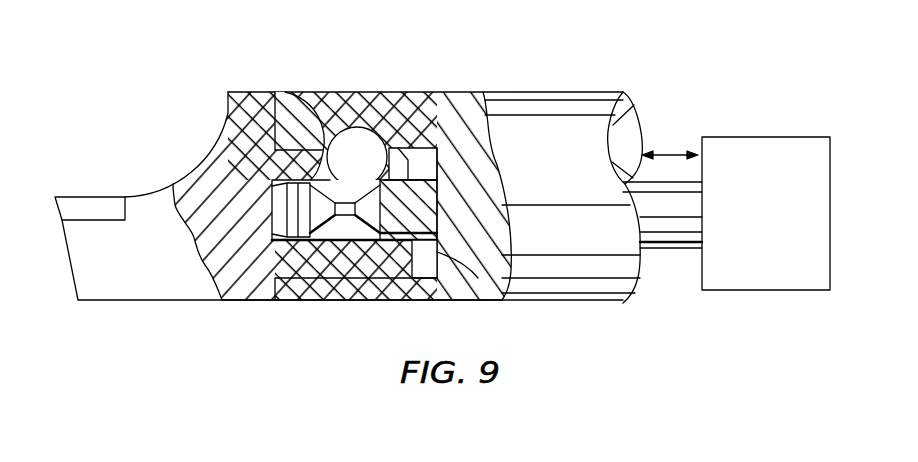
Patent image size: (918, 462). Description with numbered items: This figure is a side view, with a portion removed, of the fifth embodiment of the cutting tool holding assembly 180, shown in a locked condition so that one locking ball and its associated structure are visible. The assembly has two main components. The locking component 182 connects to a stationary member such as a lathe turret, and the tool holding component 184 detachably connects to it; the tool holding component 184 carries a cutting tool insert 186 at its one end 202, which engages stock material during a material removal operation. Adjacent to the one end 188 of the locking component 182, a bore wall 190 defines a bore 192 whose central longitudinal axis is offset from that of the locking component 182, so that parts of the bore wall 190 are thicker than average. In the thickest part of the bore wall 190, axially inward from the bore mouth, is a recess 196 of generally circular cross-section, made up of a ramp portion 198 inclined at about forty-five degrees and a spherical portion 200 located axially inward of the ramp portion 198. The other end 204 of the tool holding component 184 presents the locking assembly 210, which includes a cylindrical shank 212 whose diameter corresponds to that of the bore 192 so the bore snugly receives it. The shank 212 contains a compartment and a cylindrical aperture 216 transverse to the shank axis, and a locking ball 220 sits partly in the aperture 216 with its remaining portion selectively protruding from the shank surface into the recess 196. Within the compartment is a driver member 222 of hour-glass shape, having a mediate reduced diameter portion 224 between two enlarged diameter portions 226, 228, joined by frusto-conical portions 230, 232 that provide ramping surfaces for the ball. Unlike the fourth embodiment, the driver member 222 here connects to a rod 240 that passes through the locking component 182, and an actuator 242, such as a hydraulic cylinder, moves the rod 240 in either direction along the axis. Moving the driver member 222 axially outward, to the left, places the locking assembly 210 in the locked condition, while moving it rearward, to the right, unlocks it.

The cutting tool holding assembly 180 is at (329, 209).
The locking component 182 is at (614, 303).
The tool holding component 184 is at (100, 292).
The cutting tool insert 186 is at (77, 203).
The one end of the locking component 188 is at (258, 307).
The bore wall 190 is at (370, 298).
The bore 192 is at (510, 293).
The recess 196 is at (408, 203).
The ramp portion 198 is at (350, 122).
The spherical portion 200 is at (370, 200).
The one end of the tool holding component 202 is at (70, 273).
The other end of the tool holding component 204 is at (432, 290).
The locking assembly 210 is at (190, 143).
The cylindrical shank 212 is at (385, 300).
The cylindrical aperture 216 is at (290, 100).
The locking ball 220 is at (357, 127).
The driver member 222 is at (230, 110).
The mediate reduced diameter portion 224 is at (316, 285).
The enlarged diameter portion 226 is at (197, 300).
The enlarged diameter portion 228 is at (437, 170).
The frusto-conical portion 230 is at (287, 300).
The frusto-conical portion 232 is at (486, 104).
The rod 240 is at (673, 248).
The actuator 242 is at (795, 208).